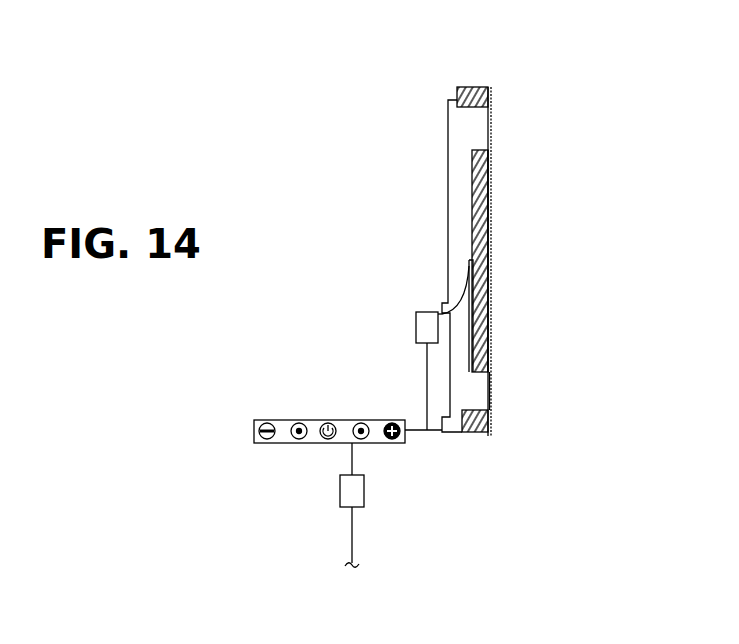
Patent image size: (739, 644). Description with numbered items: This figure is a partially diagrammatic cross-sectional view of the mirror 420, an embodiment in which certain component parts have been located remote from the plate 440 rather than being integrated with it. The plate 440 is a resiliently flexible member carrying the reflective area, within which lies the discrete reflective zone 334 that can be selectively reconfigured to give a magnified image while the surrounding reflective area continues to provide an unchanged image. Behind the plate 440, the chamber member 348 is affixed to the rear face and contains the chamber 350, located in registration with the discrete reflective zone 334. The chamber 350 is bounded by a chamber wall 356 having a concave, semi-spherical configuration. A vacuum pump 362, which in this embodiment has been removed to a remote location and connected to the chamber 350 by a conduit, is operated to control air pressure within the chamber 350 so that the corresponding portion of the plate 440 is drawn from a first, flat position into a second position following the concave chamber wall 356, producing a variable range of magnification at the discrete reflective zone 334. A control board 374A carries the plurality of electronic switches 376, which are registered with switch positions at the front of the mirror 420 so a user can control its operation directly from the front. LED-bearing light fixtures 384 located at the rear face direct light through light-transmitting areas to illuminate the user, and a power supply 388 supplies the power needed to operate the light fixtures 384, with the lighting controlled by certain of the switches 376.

The LED-bearing light fixture 384 is at (475, 87).
The mirror 420 is at (493, 122).
The chamber member 348 is at (472, 172).
The chamber 350 is at (488, 230).
The discrete reflective zone 334 is at (492, 249).
The chamber wall 356 is at (479, 303).
The vacuum pump 362 is at (416, 328).
The plate 440 is at (492, 379).
The control board 374A is at (280, 444).
The electronic switch 376 is at (325, 445).
The power supply 388 is at (365, 491).